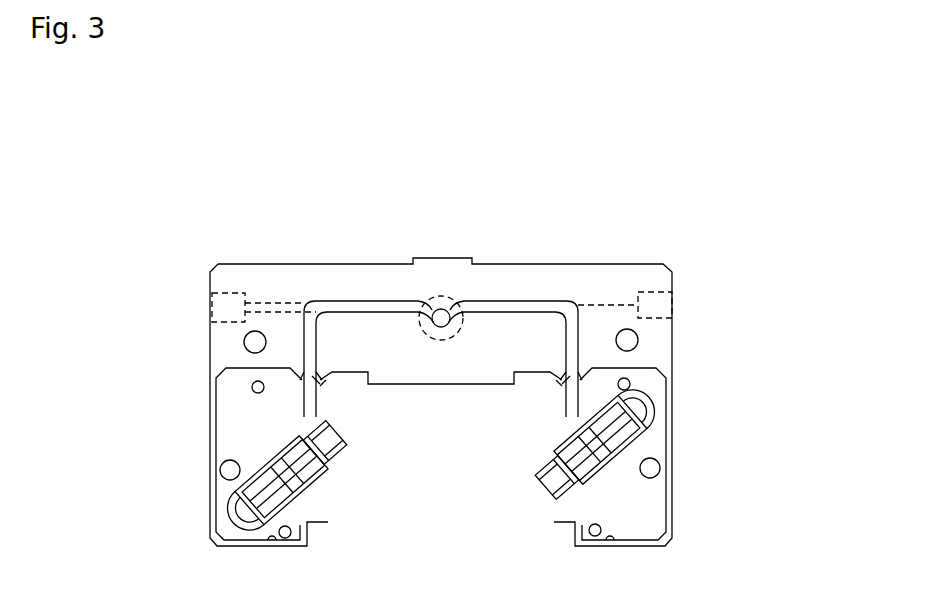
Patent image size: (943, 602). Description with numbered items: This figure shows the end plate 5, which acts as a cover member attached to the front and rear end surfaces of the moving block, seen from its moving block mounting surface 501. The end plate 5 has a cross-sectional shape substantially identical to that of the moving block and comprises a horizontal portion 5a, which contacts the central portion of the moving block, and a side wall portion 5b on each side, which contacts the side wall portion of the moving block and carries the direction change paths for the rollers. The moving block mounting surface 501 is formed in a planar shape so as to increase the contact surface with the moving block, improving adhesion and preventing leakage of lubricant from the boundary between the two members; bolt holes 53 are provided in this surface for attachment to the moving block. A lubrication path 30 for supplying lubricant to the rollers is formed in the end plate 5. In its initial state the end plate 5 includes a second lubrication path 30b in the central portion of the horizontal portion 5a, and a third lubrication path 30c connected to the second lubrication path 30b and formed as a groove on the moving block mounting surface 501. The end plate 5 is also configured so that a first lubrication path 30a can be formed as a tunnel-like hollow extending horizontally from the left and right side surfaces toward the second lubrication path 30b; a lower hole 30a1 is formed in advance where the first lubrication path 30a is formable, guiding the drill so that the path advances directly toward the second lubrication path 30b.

The end plate 5 is at (674, 204).
The horizontal portion 5a is at (443, 374).
The side wall portion 5b is at (208, 413).
The bolt hole 53 is at (246, 345).
The lubrication path 30 is at (382, 298).
The first lubrication path 30a is at (277, 303).
The lower hole 30a1 is at (603, 304).
The second lubrication path 30b is at (442, 316).
The third lubrication path 30c is at (518, 302).
The moving block mounting surface 501 is at (473, 353).